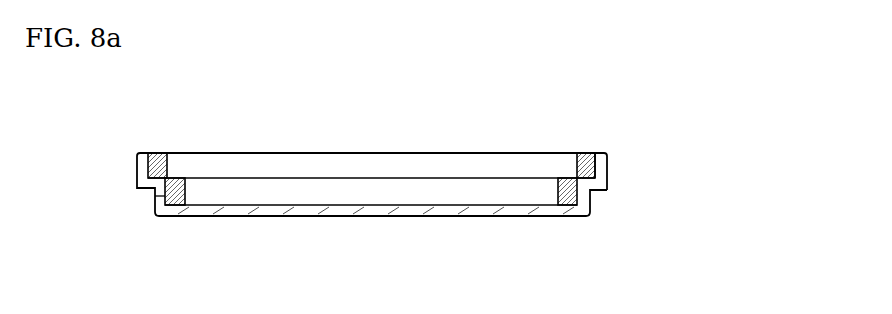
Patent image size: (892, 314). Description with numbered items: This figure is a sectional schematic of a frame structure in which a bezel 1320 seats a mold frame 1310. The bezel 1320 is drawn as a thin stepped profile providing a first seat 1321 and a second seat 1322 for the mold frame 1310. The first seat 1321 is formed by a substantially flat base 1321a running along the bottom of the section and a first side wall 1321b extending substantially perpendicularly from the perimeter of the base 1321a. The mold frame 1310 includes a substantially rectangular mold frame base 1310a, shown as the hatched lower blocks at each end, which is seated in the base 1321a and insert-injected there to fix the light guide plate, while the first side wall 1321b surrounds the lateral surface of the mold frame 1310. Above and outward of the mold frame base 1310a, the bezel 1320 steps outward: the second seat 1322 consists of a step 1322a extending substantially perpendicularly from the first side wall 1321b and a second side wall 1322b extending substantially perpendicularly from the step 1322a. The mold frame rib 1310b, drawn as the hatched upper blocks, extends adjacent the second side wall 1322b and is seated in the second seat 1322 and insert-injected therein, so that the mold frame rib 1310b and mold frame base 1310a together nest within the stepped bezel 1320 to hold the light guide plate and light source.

The mold frame 1310 is at (351, 172).
The mold frame base 1310a is at (187, 193).
The mold frame rib 1310b is at (159, 153).
The bezel 1320 is at (403, 185).
The first seat 1321 is at (324, 214).
The base 1321a is at (362, 234).
The first side wall 1321b is at (155, 196).
The second seat 1322 is at (669, 204).
The step 1322a is at (592, 190).
The second side wall 1322b is at (607, 170).